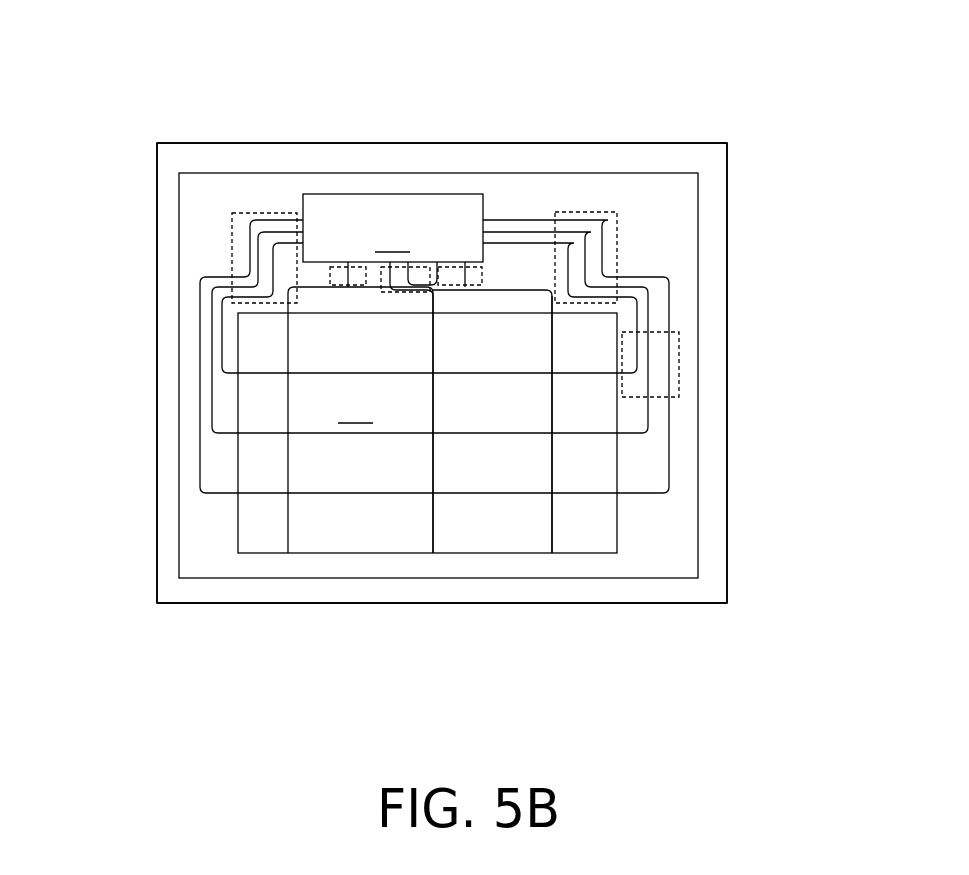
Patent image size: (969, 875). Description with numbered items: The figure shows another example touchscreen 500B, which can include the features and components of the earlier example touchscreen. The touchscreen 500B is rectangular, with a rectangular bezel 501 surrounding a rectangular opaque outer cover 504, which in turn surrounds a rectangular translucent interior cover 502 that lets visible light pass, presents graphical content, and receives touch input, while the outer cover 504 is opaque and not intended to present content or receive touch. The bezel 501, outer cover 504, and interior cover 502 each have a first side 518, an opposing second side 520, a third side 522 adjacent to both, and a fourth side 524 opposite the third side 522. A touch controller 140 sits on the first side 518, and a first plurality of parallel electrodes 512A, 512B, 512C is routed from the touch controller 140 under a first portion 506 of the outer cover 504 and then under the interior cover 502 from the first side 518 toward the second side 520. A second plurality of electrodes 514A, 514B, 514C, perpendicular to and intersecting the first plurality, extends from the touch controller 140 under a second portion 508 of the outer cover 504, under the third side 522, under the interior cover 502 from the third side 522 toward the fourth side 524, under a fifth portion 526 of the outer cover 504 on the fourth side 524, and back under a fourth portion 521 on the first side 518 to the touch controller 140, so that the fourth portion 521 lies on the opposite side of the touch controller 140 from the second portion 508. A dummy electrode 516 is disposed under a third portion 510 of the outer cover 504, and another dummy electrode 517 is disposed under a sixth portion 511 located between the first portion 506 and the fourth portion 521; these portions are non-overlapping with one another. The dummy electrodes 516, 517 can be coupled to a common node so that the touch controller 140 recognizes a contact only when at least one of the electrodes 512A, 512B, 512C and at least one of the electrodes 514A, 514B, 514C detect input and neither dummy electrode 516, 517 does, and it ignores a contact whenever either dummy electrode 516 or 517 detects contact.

The touchscreen 500B is at (291, 135).
The bezel 501 is at (728, 337).
The interior cover 502 is at (427, 433).
The outer cover 504 is at (673, 173).
The first portion 506 is at (407, 292).
The second portion 508 is at (232, 252).
The third portion 510 is at (333, 282).
The sixth portion 511 is at (480, 283).
The electrode 512A is at (288, 446).
The electrode 512B is at (433, 517).
The electrode 512C is at (552, 507).
The electrode 514A is at (470, 372).
The electrode 514B is at (465, 432).
The electrode 514C is at (460, 492).
The dummy electrode 516 is at (349, 287).
The dummy electrode 517 is at (465, 273).
The first side 518 is at (499, 136).
The second side 520 is at (504, 614).
The fourth portion 521 is at (588, 213).
The third side 522 is at (149, 475).
The fourth side 524 is at (737, 483).
The fifth portion 526 is at (678, 332).
The touch controller 140 is at (393, 228).